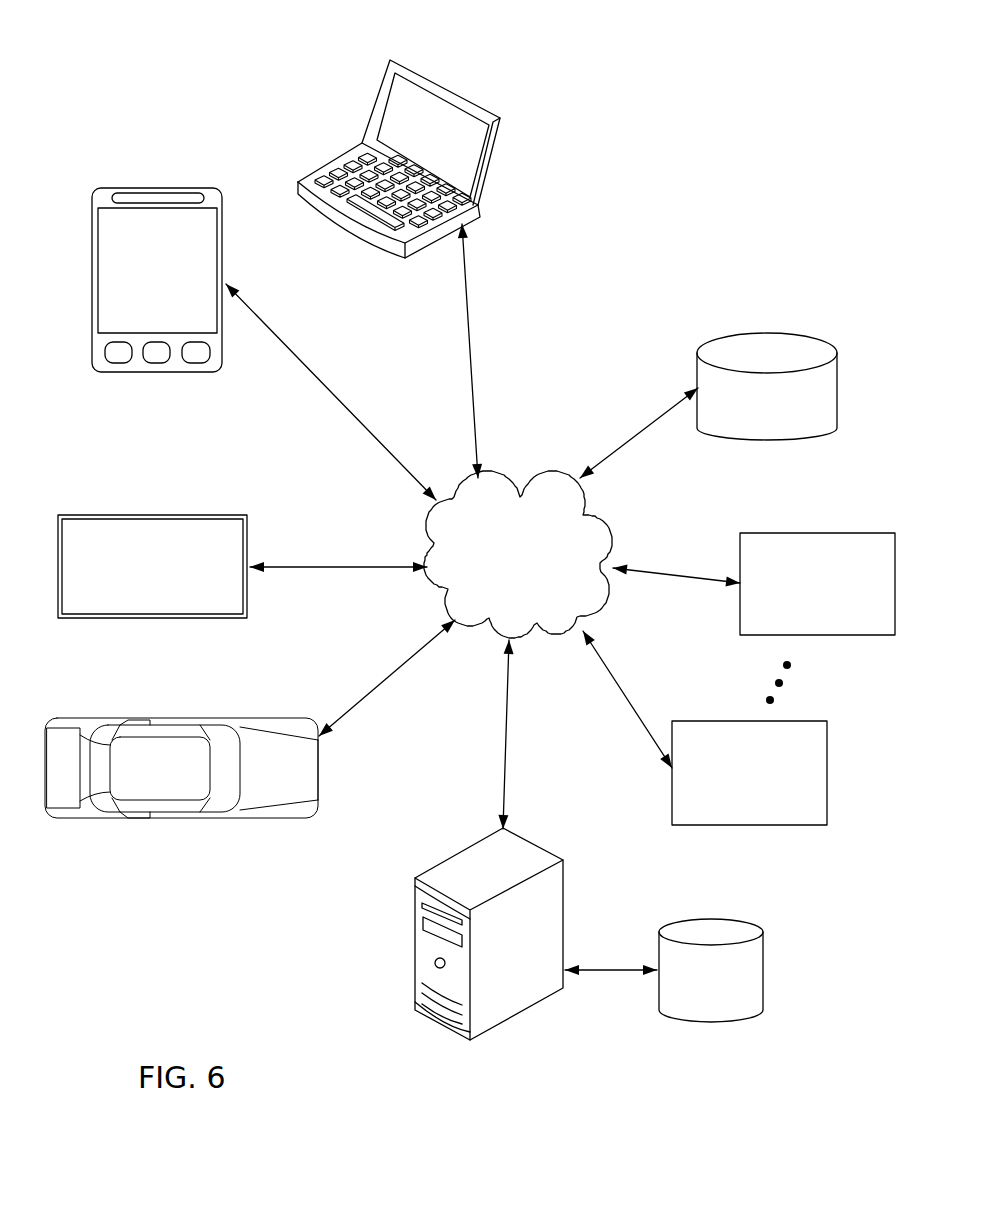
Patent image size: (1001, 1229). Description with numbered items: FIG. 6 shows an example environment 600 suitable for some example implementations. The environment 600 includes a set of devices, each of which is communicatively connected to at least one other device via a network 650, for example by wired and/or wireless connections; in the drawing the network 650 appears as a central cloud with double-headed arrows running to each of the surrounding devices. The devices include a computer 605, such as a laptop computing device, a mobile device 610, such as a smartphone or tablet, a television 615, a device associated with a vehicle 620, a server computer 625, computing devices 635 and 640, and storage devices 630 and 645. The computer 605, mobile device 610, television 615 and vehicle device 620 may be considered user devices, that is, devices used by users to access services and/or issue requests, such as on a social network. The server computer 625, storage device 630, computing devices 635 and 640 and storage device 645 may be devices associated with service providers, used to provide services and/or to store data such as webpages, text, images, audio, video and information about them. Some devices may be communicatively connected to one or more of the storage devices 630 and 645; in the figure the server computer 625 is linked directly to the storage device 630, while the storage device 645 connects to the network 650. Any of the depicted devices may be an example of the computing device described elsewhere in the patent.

The environment 600 is at (178, 56).
The computer 605 is at (419, 148).
The mobile device 610 is at (144, 285).
The television 615 is at (134, 575).
The device associated with a vehicle 620 is at (144, 781).
The server computer 625 is at (495, 960).
The storage device 630 is at (700, 986).
The computing device 635 is at (735, 790).
The computing device 640 is at (804, 586).
The storage device 645 is at (752, 415).
The network 650 is at (500, 588).